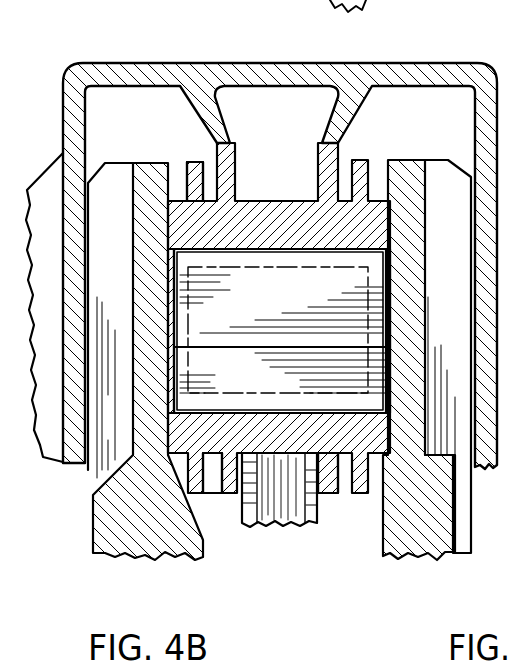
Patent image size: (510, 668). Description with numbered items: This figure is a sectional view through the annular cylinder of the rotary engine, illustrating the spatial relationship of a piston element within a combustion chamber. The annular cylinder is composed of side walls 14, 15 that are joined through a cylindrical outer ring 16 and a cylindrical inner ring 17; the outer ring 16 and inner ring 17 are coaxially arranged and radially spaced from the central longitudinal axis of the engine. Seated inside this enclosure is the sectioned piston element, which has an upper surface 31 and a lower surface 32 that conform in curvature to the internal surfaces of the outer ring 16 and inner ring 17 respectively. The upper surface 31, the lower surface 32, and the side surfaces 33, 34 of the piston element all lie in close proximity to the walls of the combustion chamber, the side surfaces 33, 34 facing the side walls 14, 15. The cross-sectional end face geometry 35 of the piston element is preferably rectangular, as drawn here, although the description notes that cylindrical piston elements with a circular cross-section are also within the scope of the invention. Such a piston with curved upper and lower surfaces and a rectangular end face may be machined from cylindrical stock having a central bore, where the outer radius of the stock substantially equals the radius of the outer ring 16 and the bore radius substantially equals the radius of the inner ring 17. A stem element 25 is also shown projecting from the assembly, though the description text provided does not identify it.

The side wall 14 is at (152, 173).
The side wall 15 is at (413, 173).
The cylindrical outer ring 16 is at (195, 173).
The cylindrical inner ring 17 is at (340, 446).
The stem 25 is at (292, 510).
The upper surface 31 is at (243, 247).
The lower surface 32 is at (218, 415).
The side surface 33 is at (388, 320).
The side surface 34 is at (172, 393).
The cross-sectional end face geometry 35 is at (272, 320).